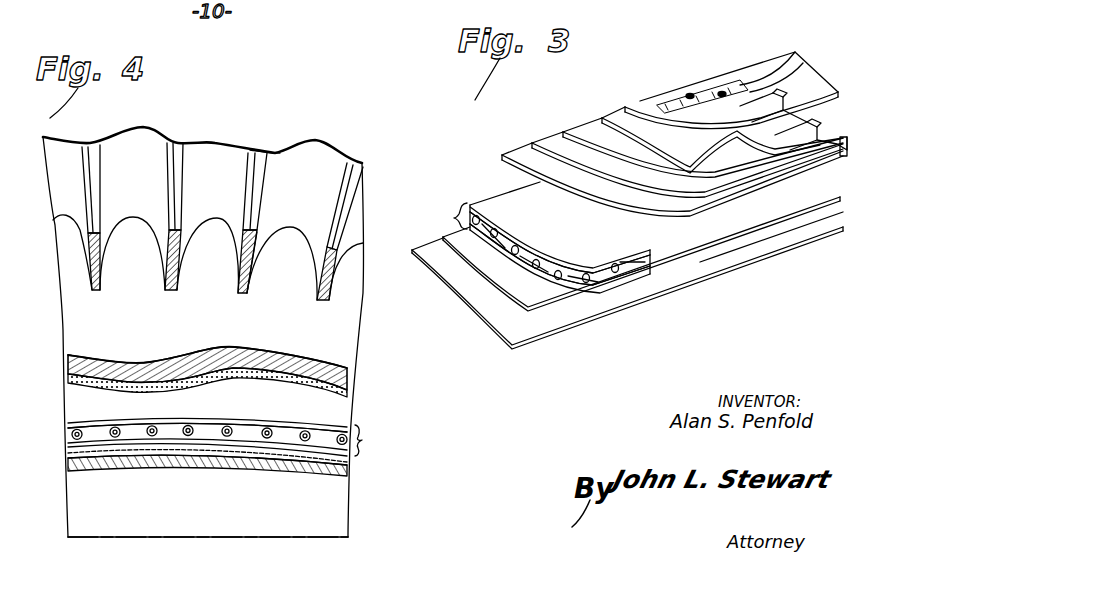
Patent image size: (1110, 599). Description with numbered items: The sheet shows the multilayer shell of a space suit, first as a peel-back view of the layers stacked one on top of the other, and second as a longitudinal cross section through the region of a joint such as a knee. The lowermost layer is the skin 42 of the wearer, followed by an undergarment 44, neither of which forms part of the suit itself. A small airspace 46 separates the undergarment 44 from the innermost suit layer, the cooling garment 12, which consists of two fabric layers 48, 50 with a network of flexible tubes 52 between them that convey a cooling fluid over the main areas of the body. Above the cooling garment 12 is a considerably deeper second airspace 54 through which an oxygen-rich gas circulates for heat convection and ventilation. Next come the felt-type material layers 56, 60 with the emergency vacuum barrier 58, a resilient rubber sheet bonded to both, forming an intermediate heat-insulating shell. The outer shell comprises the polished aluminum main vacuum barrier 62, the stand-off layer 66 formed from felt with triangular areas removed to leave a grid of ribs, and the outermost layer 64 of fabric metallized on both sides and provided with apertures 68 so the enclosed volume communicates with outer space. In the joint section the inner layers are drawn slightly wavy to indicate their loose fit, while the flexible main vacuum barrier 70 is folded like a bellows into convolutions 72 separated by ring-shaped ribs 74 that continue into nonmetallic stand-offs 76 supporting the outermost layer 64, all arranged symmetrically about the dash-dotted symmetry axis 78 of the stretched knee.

In FIG. 4, the cooling garment 12 is at (372, 440).
In FIG. 3, the cooling garment 12 is at (454, 214).
In FIG. 4, the skin 42 is at (85, 471).
In FIG. 3, the skin 42 is at (470, 285).
In FIG. 4, the undergarment 44 is at (68, 460).
In FIG. 3, the undergarment 44 is at (470, 244).
In FIG. 4, the airspace 46 is at (350, 452).
In FIG. 3, the airspace 46 is at (703, 267).
In FIG. 4, the layer 48 is at (68, 452).
In FIG. 3, the layer 48 is at (597, 292).
In FIG. 4, the layer 50 is at (77, 424).
In FIG. 3, the layer 50 is at (513, 203).
In FIG. 4, the flexible tubes 52 is at (72, 434).
In FIG. 3, the flexible tubes 52 is at (496, 253).
In FIG. 4, the second airspace 54 is at (232, 399).
In FIG. 3, the second airspace 54 is at (699, 225).
In FIG. 4, the felt-type material layer 56 is at (68, 383).
In FIG. 3, the felt-type material layer 56 is at (521, 157).
In FIG. 4, the emergency vacuum barrier 58 is at (68, 370).
In FIG. 3, the emergency vacuum barrier 58 is at (556, 147).
In FIG. 4, the felt-type material layer 60 is at (98, 355).
In FIG. 3, the felt-type material layer 60 is at (589, 134).
In FIG. 3, the main vacuum barrier 62 is at (618, 119).
In FIG. 4, the outermost layer 64 is at (280, 152).
In FIG. 3, the outermost layer 64 is at (715, 93).
In FIG. 3, the stand-off layer 66 is at (813, 115).
In FIG. 3, the apertures 68 is at (690, 96).
In FIG. 4, the main vacuum barrier 70 is at (256, 257).
In FIG. 4, the convolutions 72 is at (228, 217).
In FIG. 4, the ribs 74 is at (238, 269).
In FIG. 4, the stand-offs 76 is at (249, 181).
In FIG. 4, the symmetry axis 78 is at (330, 535).